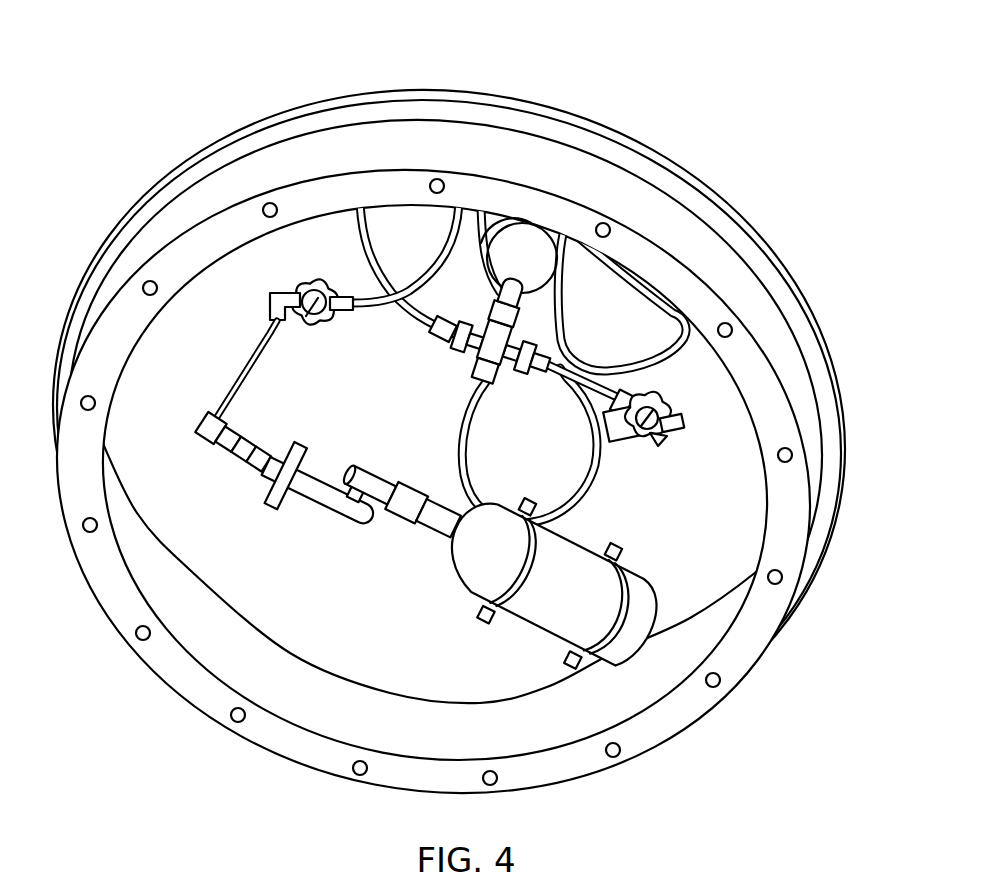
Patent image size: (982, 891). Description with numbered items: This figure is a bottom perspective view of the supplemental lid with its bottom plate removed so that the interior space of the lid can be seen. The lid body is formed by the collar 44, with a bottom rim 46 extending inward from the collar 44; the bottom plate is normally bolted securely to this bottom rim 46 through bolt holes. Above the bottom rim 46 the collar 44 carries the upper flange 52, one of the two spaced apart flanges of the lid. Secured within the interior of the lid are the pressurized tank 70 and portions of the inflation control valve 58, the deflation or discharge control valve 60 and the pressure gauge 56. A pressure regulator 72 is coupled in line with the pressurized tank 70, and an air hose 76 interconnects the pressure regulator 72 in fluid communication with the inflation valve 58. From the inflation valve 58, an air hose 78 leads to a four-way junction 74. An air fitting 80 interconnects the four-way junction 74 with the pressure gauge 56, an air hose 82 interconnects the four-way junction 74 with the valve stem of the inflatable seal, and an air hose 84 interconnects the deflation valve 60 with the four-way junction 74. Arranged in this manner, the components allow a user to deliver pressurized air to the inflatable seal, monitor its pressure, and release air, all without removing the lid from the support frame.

The collar 44 is at (687, 235).
The bottom rim 46 is at (662, 727).
The upper flange 52 is at (600, 143).
The pressure gauge 56 is at (520, 257).
The inflation control valve 58 is at (304, 318).
The deflation control valve 60 is at (668, 432).
The pressurized tank 70 is at (573, 563).
The pressure regulator 72 is at (323, 494).
The 4 way junction 74 is at (486, 350).
The air hose 76 is at (250, 362).
The air hose 78 is at (397, 317).
The air fitting 80 is at (525, 298).
The air hose 82 is at (470, 457).
The air hose 84 is at (637, 360).